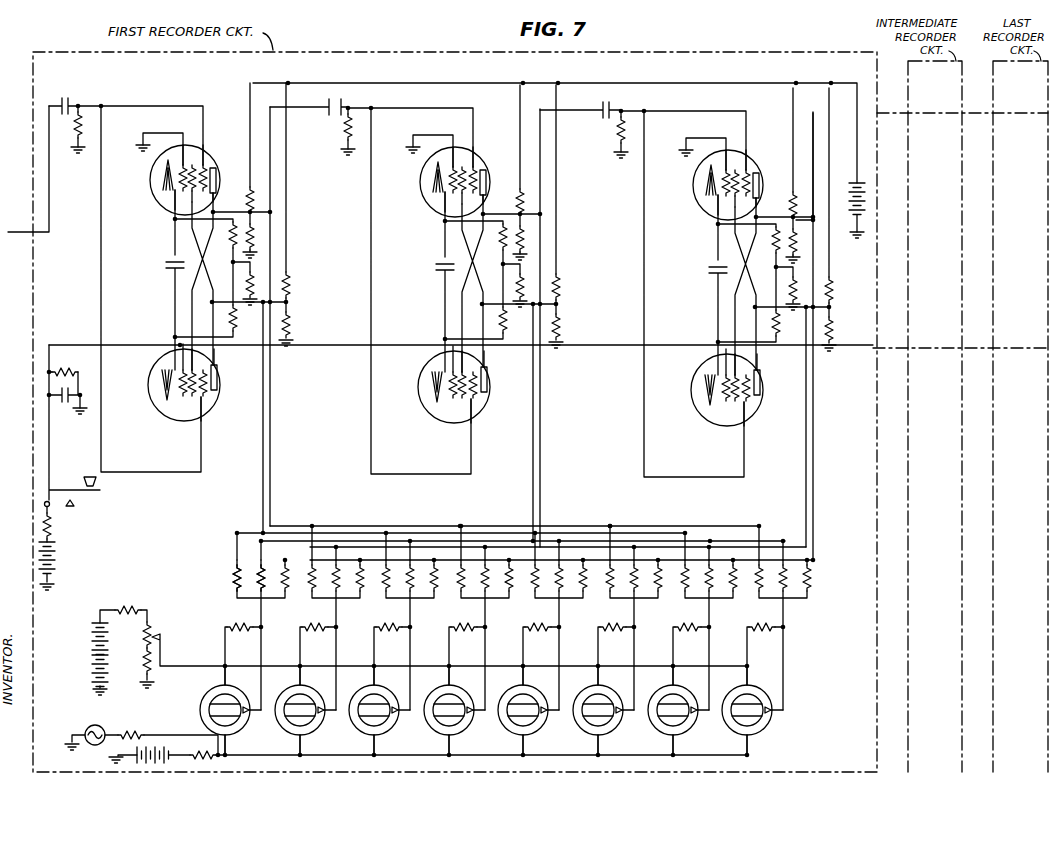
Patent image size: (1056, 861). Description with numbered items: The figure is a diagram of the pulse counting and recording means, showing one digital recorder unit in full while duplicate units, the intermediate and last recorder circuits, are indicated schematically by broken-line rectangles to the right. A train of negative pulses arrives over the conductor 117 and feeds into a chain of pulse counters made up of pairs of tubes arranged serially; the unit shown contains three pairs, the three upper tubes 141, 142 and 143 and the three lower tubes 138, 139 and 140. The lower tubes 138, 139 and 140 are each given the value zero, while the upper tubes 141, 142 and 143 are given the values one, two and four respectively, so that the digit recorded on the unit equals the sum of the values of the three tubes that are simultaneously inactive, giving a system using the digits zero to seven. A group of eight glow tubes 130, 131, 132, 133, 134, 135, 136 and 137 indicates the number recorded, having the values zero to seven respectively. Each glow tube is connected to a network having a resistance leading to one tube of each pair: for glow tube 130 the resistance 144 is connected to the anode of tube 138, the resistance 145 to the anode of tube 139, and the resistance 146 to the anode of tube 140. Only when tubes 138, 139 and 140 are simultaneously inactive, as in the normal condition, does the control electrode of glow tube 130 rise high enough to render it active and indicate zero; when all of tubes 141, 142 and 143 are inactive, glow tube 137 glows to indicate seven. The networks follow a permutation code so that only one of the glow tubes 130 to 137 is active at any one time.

The conductor 117 is at (50, 196).
The glow tube 130 is at (242, 729).
The glow tube 131 is at (317, 729).
The glow tube 132 is at (391, 729).
The glow tube 133 is at (466, 729).
The glow tube 134 is at (540, 729).
The glow tube 135 is at (615, 729).
The glow tube 136 is at (690, 729).
The glow tube 137 is at (764, 729).
The lower tube 138 is at (192, 421).
The lower tube 139 is at (455, 426).
The lower tube 140 is at (726, 428).
The upper tube 141 is at (150, 180).
The upper tube 142 is at (420, 182).
The upper tube 143 is at (695, 185).
The resistance 144 is at (232, 577).
The resistance 145 is at (256, 568).
The resistance 146 is at (295, 533).